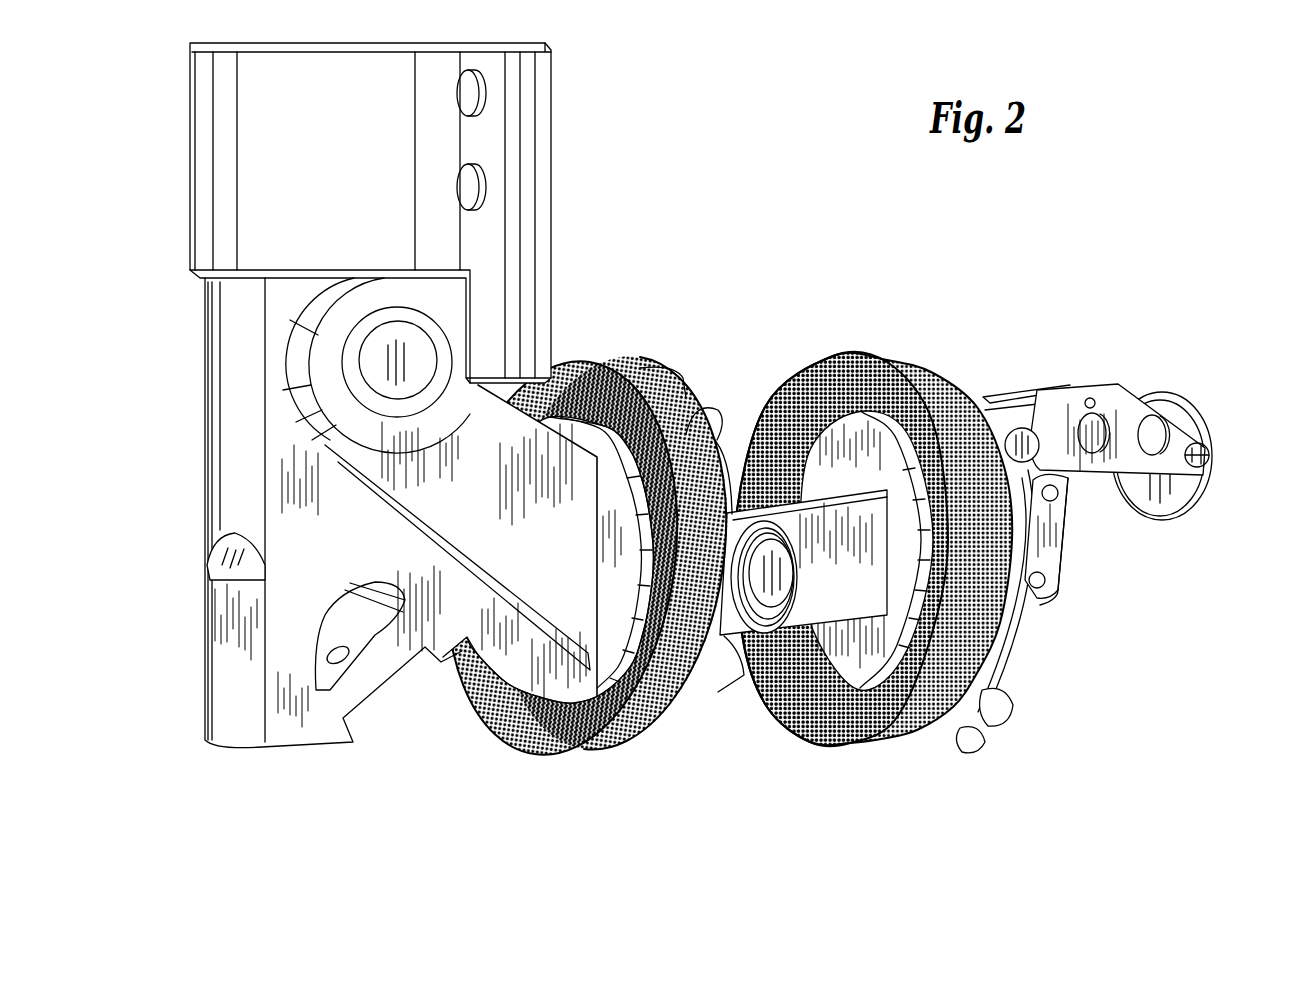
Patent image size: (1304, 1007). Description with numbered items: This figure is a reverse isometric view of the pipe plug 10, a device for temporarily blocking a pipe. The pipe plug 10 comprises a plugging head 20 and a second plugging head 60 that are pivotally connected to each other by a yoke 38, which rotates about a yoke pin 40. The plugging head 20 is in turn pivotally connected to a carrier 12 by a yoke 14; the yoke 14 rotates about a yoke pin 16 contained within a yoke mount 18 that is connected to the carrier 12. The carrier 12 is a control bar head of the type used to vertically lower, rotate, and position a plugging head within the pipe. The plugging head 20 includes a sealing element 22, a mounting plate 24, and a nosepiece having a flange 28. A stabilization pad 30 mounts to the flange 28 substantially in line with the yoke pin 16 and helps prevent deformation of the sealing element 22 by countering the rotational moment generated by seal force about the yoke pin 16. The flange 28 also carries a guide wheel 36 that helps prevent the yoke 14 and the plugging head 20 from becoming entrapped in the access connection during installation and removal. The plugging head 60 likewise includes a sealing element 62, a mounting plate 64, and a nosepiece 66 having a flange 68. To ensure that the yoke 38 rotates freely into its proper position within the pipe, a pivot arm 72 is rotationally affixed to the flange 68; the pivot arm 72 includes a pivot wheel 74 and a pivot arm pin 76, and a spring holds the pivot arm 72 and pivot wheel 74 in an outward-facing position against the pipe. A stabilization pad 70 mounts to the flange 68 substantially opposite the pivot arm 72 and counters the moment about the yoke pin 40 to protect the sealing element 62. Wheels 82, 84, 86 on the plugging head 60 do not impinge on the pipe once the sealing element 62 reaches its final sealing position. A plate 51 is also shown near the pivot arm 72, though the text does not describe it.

The pipe plug 10 is at (802, 270).
The carrier 12 is at (553, 148).
The yoke 14 is at (445, 505).
The yoke pin 16 is at (392, 332).
The yoke mount 18 is at (213, 456).
The plugging head 20 is at (591, 504).
The sealing element 22 is at (585, 367).
The mounting plate 24 is at (535, 680).
The flange 28 is at (726, 465).
The stabilization pad 30 is at (664, 373).
The guide wheel 36 is at (707, 400).
The yoke 38 is at (803, 641).
The yoke pin 40 is at (793, 577).
The plate 51 is at (982, 400).
The plugging head 60 is at (873, 539).
The sealing element 62 is at (890, 360).
The mounting plate 64 is at (855, 680).
The nosepiece 66 is at (1028, 618).
The flange 68 is at (1110, 562).
The stabilization pad 70 is at (978, 740).
The pivot arm 72 is at (1120, 400).
The pivot wheel 74 is at (1185, 415).
The pivot arm pin 76 is at (1023, 430).
The wheel 82 is at (1072, 500).
The wheel 84 is at (1055, 600).
The wheel 86 is at (1012, 708).